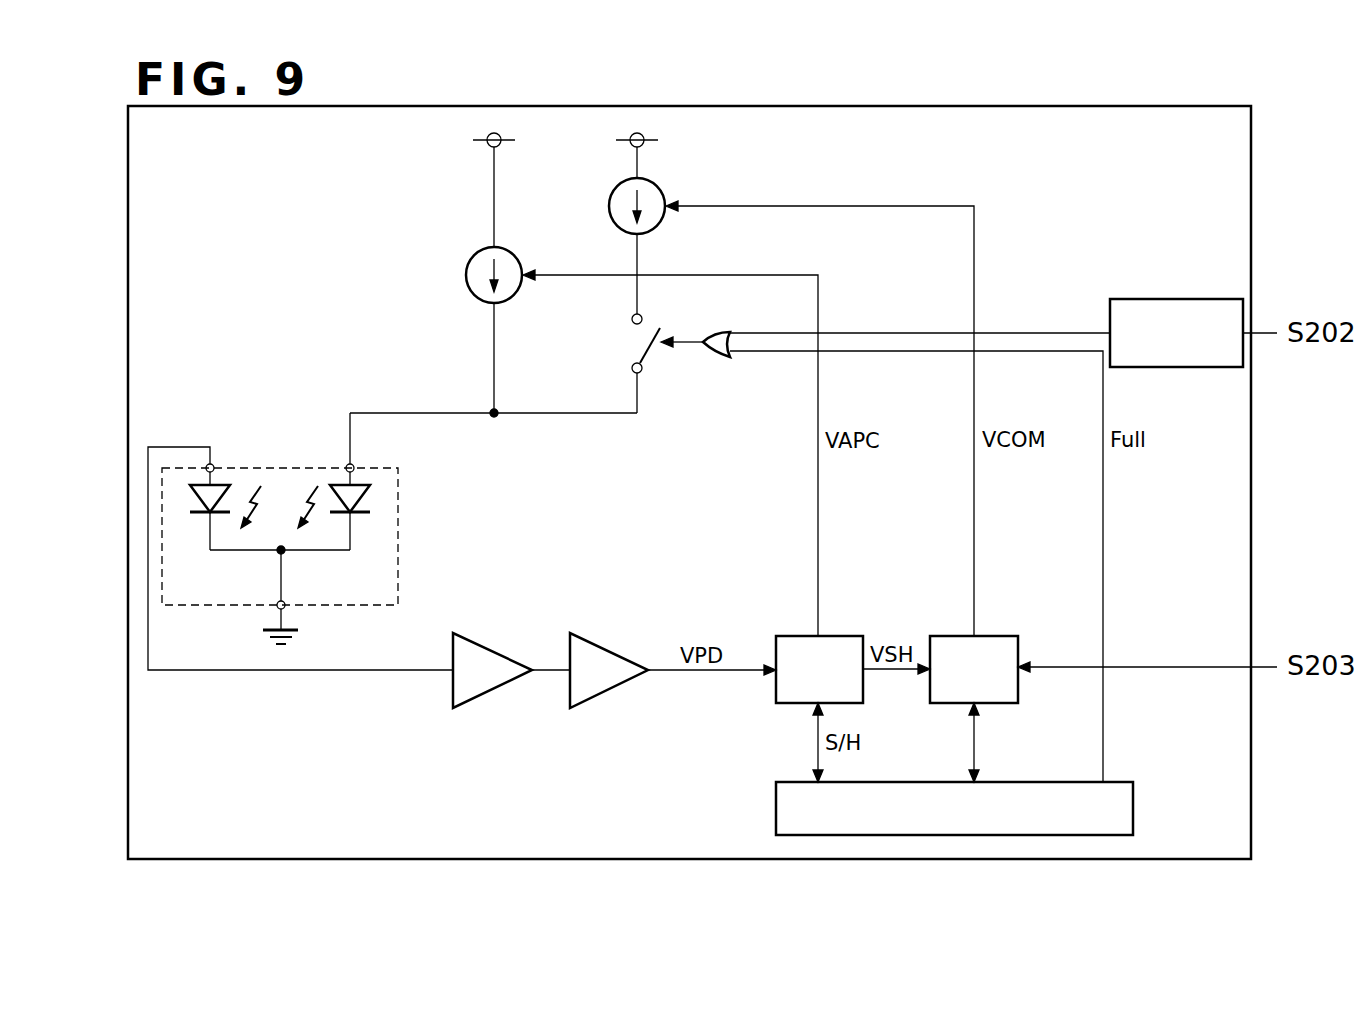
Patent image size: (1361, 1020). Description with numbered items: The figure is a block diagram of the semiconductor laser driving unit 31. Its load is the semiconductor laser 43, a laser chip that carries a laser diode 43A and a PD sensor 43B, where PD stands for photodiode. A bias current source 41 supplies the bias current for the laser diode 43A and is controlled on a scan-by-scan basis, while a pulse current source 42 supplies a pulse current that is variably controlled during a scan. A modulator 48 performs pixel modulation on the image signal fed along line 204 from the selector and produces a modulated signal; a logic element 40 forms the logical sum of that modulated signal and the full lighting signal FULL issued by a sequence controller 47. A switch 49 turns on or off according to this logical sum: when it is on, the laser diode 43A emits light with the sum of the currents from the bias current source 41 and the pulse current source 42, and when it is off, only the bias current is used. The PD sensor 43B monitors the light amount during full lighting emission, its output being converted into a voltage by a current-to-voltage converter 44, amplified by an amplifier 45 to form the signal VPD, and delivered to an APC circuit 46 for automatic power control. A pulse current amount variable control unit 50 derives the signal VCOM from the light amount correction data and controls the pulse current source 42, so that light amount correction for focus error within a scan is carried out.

The semiconductor laser driving unit 31 is at (1252, 119).
The logic element 40 is at (720, 330).
The bias current source 41 is at (466, 282).
The pulse current source 42 is at (610, 210).
The semiconductor laser 43 is at (280, 509).
The laser diode 43A is at (362, 516).
The PD sensor 43B is at (201, 516).
The current-to-voltage converter 44 is at (492, 643).
The amplifier 45 is at (608, 643).
The APC circuit 46 is at (778, 636).
The sequence controller 47 is at (1063, 782).
The modulator 48 is at (1210, 299).
The switch 49 is at (627, 336).
The pulse current amount variable control unit 50 is at (945, 636).
The laser drive signal line 204 is at (350, 424).